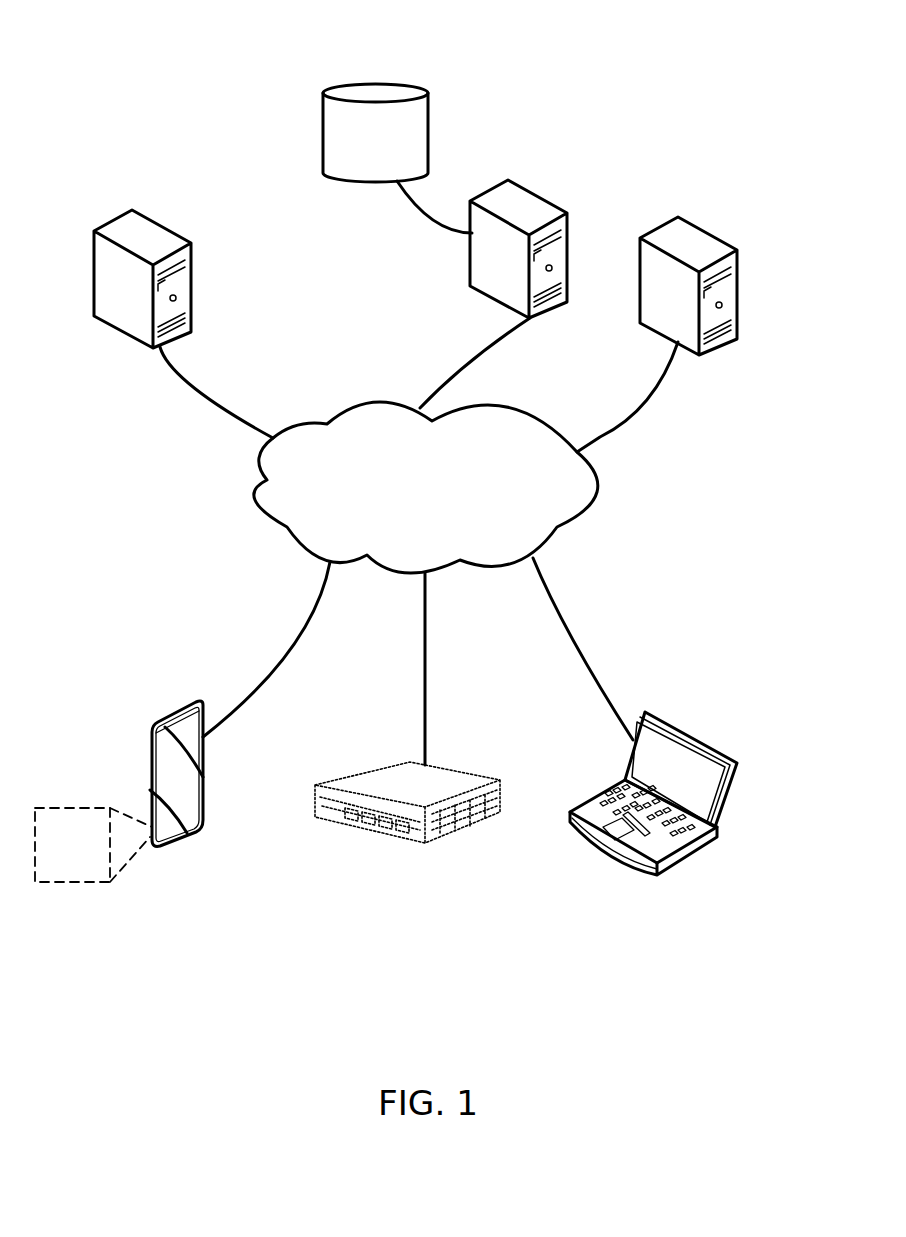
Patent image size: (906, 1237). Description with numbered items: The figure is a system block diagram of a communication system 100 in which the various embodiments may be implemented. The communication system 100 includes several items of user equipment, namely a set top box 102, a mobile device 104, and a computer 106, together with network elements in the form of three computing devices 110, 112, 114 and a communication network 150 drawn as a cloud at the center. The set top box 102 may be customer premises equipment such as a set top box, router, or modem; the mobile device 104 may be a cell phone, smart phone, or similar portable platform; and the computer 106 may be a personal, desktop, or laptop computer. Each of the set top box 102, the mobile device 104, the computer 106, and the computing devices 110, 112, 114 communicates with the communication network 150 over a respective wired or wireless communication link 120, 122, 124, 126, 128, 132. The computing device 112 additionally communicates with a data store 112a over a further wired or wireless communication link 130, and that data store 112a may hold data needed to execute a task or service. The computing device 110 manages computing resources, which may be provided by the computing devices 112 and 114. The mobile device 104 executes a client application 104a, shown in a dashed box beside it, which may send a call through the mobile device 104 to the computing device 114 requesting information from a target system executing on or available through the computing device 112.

The communication system 100 is at (90, 64).
The set top box 102 is at (412, 847).
The mobile device 104 is at (185, 832).
The client application 104a is at (93, 845).
The computer 106 is at (685, 858).
The computing device 110 is at (152, 218).
The computing device 112 is at (555, 203).
The data store 112a is at (375, 133).
The computing device 114 is at (725, 240).
The communication link 120 is at (290, 650).
The communication link 122 is at (425, 643).
The communication link 124 is at (573, 640).
The communication link 126 is at (193, 387).
The communication link 128 is at (470, 362).
The communication link 130 is at (418, 210).
The communication link 132 is at (643, 400).
The communication network 150 is at (446, 531).